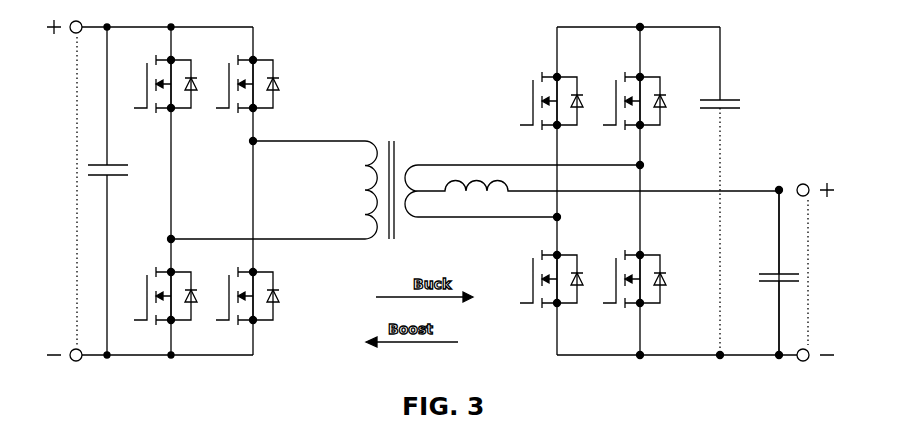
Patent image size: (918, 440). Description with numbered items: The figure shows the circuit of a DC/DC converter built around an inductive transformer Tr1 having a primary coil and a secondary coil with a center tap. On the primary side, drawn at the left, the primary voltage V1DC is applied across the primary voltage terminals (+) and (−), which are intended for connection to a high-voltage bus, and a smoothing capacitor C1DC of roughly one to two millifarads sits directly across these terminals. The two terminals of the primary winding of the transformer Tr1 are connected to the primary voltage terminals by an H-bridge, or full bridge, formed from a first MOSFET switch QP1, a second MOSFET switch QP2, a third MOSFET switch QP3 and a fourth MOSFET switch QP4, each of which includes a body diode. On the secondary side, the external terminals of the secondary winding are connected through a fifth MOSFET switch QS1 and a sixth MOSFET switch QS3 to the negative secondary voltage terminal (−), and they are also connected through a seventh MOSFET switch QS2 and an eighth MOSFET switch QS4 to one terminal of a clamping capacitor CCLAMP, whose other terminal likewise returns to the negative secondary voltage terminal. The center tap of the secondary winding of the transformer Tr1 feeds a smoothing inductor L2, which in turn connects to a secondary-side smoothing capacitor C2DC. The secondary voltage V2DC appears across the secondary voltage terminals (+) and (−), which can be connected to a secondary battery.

The first MOSFET switch QP1 is at (174, 308).
The second MOSFET switch QP2 is at (173, 74).
The third MOSFET switch QP3 is at (257, 308).
The fourth MOSFET switch QP4 is at (256, 74).
The fifth MOSFET switch QS1 is at (560, 295).
The seventh MOSFET switch QS2 is at (560, 82).
The sixth MOSFET switch QS3 is at (643, 295).
The eighth MOSFET switch QS4 is at (643, 82).
The inductive transformer Tr1 is at (391, 177).
The smoothing inductor L2 is at (598, 165).
The smoothing capacitor C1DC is at (120, 191).
The secondary-side smoothing capacitor C2DC is at (763, 272).
The clamping capacitor CCLAMP is at (740, 214).
The primary voltage V1DC is at (52, 190).
The secondary voltage V2DC is at (832, 272).